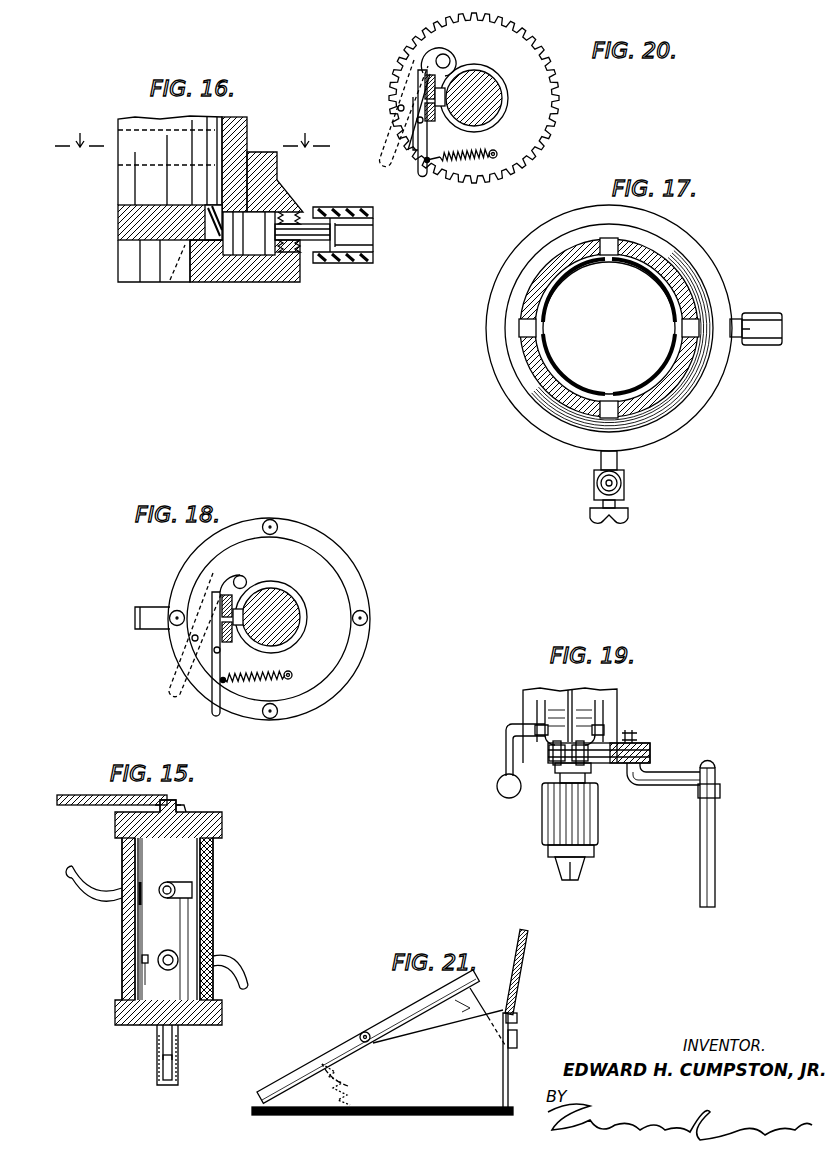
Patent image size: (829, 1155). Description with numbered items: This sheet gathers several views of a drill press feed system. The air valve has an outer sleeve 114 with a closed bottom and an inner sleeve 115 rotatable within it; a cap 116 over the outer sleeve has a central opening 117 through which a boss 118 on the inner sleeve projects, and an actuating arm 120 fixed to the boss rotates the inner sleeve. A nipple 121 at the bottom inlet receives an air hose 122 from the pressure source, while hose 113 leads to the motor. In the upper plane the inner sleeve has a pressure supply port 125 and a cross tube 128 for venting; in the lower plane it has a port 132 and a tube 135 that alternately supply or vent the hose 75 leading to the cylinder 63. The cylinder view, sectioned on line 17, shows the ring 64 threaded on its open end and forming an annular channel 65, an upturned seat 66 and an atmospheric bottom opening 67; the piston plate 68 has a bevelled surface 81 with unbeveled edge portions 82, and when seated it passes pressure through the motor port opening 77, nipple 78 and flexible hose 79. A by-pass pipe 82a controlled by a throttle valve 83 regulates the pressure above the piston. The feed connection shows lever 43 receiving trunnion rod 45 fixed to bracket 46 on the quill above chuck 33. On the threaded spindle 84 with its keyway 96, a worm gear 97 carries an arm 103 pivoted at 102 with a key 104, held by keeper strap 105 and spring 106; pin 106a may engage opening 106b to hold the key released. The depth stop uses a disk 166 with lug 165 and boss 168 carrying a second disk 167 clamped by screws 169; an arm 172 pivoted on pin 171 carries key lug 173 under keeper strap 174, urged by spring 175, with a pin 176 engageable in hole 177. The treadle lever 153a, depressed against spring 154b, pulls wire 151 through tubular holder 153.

In FIG. 16, the section line 17- 17 is at (192, 130).
In FIG. 19, the chuck 33 is at (558, 870).
In FIG. 19, the lever 43 is at (708, 842).
In FIG. 19, the trunnion rod 45 is at (660, 795).
In FIG. 19, the bracket 46 is at (650, 750).
In FIG. 17, the cylinder 63 is at (505, 348).
In FIG. 16, the ring 64 is at (285, 196).
In FIG. 16, the annular passage or channel 65 is at (260, 270).
In FIG. 16, the upwardly turned portion 66 is at (250, 265).
In FIG. 16, the circular bottom opening 67 is at (125, 270).
In FIG. 16, the piston plate 68 is at (130, 224).
In FIG. 17, the piston plate 68 is at (560, 352).
In FIG. 15, the flexible hose 75 is at (252, 982).
In FIG. 16, the port opening 77 is at (275, 263).
In FIG. 16, the nipple 78 is at (300, 256).
In FIG. 16, the flexible hose 79 is at (366, 266).
In FIG. 17, the flexible hose 79 is at (772, 315).
In FIG. 16, the bevelled surface 81 is at (170, 280).
In FIG. 17, the bevelled surface 81 is at (655, 268).
In FIG. 16, the unbeveled edge portions 82 is at (213, 208).
In FIG. 17, the unbeveled edge portions 82 is at (612, 252).
In FIG. 17, the by-pass pipe 82a is at (622, 465).
In FIG. 17, the throttle valve 83 is at (626, 516).
In FIG. 20, the spindle 84 is at (498, 98).
In FIG. 18, the spindle 84 is at (243, 610).
In FIG. 20, the keyway 96 is at (450, 83).
In FIG. 18, the keyway 96 is at (240, 603).
In FIG. 20, the worm gear 97 is at (535, 44).
In FIG. 20, the pivot 102 is at (450, 58).
In FIG. 20, the arm 103 is at (421, 175).
In FIG. 20, the lug or key 104 is at (442, 110).
In FIG. 20, the keeper strap 105 is at (433, 70).
In FIG. 20, the coiled tension spring 106 is at (458, 162).
In FIG. 20, the pin 106a is at (420, 120).
In FIG. 20, the opening 106b is at (400, 109).
In FIG. 15, the air hose 113 is at (78, 890).
In FIG. 15, the outer sleeve 114 is at (216, 905).
In FIG. 15, the inner sleeve 115 is at (134, 935).
In FIG. 15, the cap 116 is at (222, 831).
In FIG. 15, the central opening 117 is at (192, 815).
In FIG. 15, the boss 118 is at (180, 800).
In FIG. 15, the actuating arm 120 is at (92, 808).
In FIG. 15, the nipple 121 is at (178, 1032).
In FIG. 15, the air hose 122 is at (180, 1072).
In FIG. 15, the pressure supply port 125 is at (140, 893).
In FIG. 15, the cross tube 128 is at (188, 882).
In FIG. 15, the port 132 is at (147, 972).
In FIG. 15, the tube 135 is at (167, 950).
In FIG. 21, the flexible push-pull wire 151 is at (517, 1040).
In FIG. 21, the tubular holder 153 is at (522, 998).
In FIG. 21, the treadle lever 153a is at (415, 1008).
In FIG. 21, the spring 154b is at (350, 1085).
In FIG. 18, the lug 165 is at (133, 618).
In FIG. 18, the disk 166 is at (185, 573).
In FIG. 18, the second disk 167 is at (318, 555).
In FIG. 18, the circular boss 168 is at (302, 608).
In FIG. 18, the clamping screws 169 is at (367, 610).
In FIG. 18, the pin 171 is at (246, 576).
In FIG. 18, the arm 172 is at (213, 712).
In FIG. 18, the lug 173 is at (238, 632).
In FIG. 18, the keeper strap 174 is at (222, 600).
In FIG. 18, the coiled tension spring 175 is at (275, 680).
In FIG. 18, the pin 176 is at (216, 652).
In FIG. 18, the hole 177 is at (192, 640).